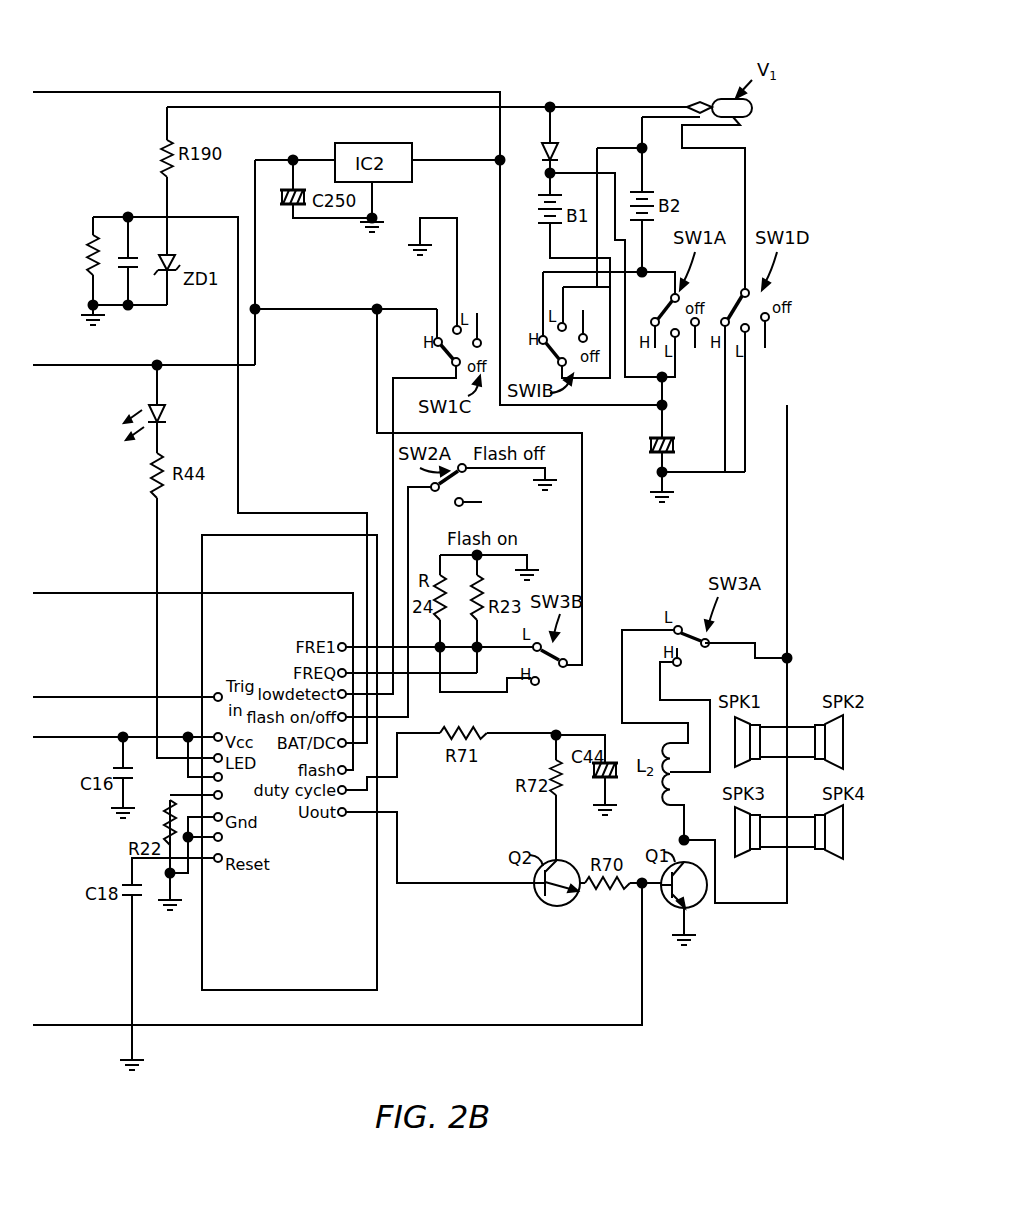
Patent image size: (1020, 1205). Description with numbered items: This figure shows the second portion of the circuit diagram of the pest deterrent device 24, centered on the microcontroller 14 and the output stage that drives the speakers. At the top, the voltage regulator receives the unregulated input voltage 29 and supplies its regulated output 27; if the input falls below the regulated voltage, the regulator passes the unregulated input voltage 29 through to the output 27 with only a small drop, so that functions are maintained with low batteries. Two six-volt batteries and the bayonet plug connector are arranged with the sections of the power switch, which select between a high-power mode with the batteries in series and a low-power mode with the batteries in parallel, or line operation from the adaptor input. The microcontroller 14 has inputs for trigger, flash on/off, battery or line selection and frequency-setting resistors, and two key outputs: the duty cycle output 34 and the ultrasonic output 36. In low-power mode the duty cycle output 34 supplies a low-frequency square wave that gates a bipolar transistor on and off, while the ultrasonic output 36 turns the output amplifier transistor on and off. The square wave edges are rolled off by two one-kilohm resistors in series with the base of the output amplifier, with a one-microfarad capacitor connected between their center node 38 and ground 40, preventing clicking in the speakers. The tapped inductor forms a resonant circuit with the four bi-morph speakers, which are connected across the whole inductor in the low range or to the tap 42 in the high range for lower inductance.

The pest deterrent device 24 is at (572, 58).
The output 27 is at (291, 156).
The unregulated input voltage 29 is at (503, 160).
The microcontroller 14 is at (380, 952).
The duty cycle output 34 is at (347, 792).
The ultrasonic output 36 is at (342, 820).
The center node 38 is at (555, 728).
The ground 40 is at (592, 822).
The tap 42 is at (676, 790).